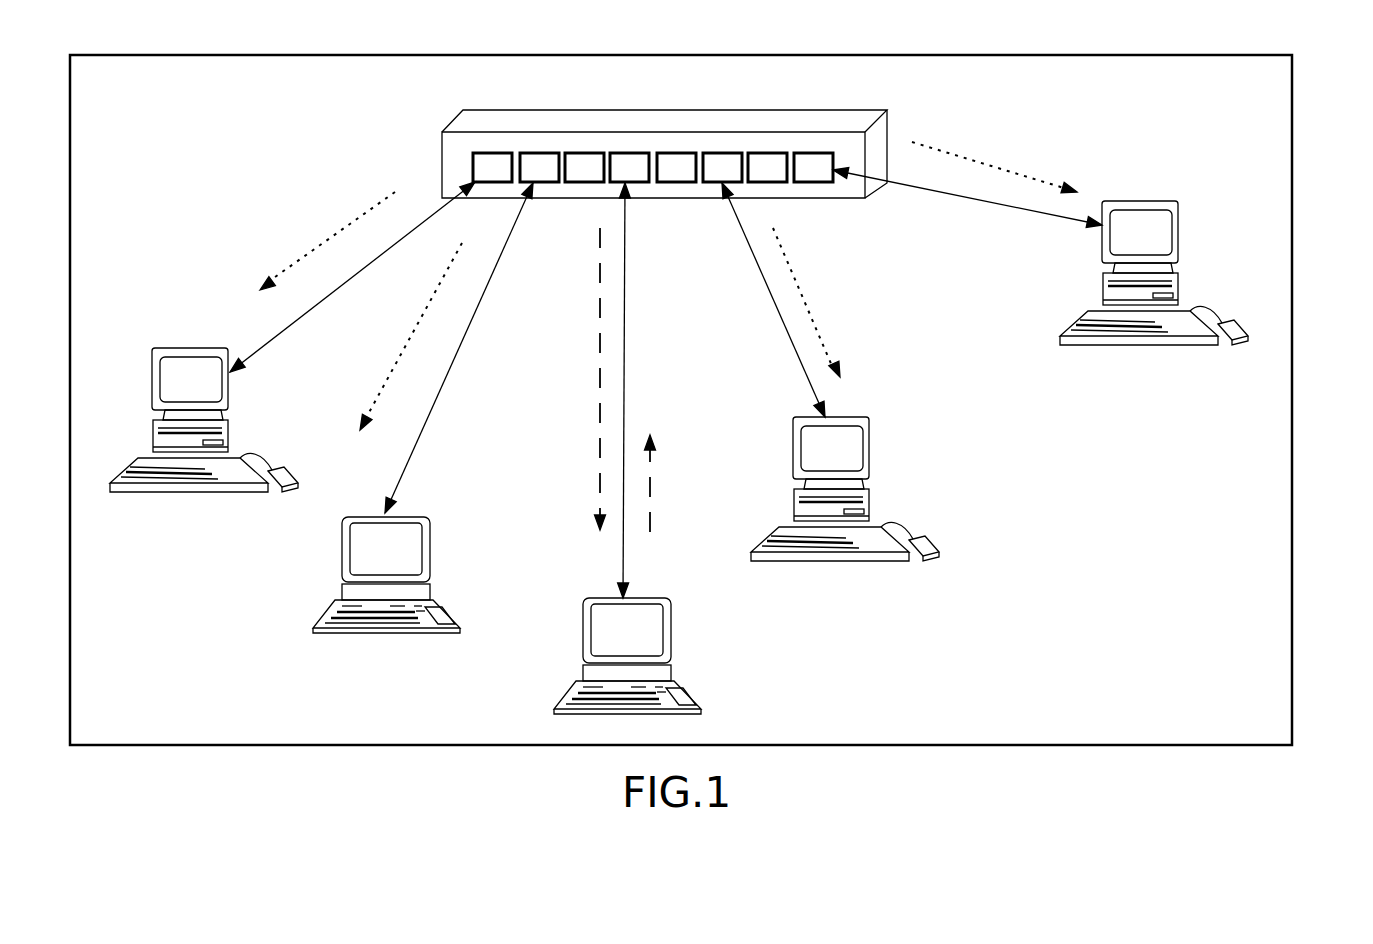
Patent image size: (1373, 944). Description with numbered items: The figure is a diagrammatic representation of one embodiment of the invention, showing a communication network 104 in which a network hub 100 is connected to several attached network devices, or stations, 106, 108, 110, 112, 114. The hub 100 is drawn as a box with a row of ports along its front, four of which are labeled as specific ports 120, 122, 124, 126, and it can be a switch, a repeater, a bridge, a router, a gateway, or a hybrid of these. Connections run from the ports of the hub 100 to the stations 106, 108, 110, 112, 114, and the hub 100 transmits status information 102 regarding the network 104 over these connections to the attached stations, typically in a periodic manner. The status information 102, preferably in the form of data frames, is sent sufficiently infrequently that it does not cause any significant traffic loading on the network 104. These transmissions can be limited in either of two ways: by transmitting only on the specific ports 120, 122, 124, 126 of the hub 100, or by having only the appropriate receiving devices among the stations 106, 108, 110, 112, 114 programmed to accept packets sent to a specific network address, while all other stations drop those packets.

The network hub 100 is at (674, 187).
The status information 102 is at (600, 420).
The network 104 is at (1292, 187).
The network device 106 is at (150, 492).
The network device 108 is at (338, 632).
The network device 110 is at (683, 687).
The network device 112 is at (873, 508).
The network device 114 is at (1180, 243).
The port 120 is at (497, 153).
The port 122 is at (553, 182).
The port 124 is at (647, 182).
The port 126 is at (773, 182).